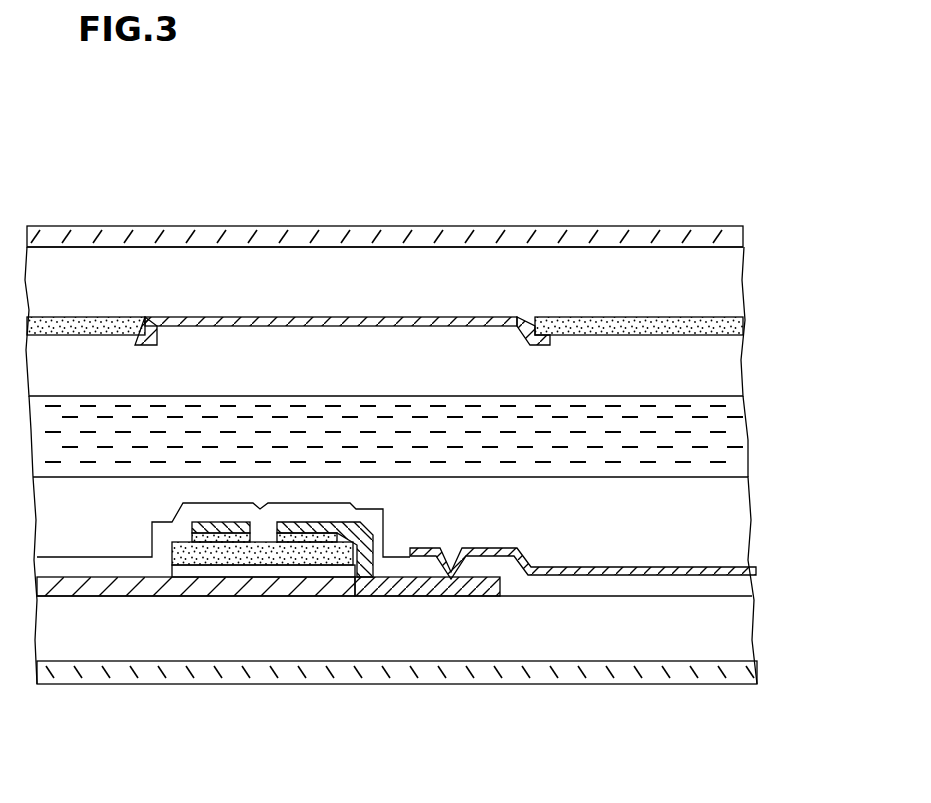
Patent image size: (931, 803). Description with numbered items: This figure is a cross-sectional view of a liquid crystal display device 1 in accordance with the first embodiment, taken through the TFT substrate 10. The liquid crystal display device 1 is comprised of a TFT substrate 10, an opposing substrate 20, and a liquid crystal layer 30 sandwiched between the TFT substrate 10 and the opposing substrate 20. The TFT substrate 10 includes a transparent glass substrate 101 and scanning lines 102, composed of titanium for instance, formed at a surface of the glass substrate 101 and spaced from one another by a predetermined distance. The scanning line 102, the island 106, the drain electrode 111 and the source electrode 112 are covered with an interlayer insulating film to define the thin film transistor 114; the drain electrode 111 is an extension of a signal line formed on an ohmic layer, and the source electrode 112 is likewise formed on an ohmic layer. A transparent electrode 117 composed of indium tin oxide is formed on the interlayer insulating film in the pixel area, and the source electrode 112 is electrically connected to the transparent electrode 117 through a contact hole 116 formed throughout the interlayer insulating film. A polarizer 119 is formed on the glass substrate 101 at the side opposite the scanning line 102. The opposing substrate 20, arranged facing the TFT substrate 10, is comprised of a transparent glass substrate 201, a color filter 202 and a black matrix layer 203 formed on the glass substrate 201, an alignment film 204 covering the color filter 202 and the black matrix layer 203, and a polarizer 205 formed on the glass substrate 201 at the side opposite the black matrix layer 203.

The liquid crystal display device 1 is at (300, 134).
The TFT substrate 10 is at (757, 473).
The opposing substrate 20 is at (753, 226).
The liquid crystal layer 30 is at (733, 442).
The transparent glass substrate 101 is at (618, 642).
The scanning line 102 is at (203, 592).
The island 106 is at (174, 560).
The drain electrode 111 is at (194, 518).
The source electrode 112 is at (385, 520).
The thin film transistor 114 is at (337, 614).
The contact hole 116 is at (442, 594).
The transparent electrode 117 is at (644, 566).
The polarizer 119 is at (268, 673).
The transparent glass substrate 201 is at (497, 265).
The color filter 202 is at (603, 320).
The black matrix layer 203 is at (373, 318).
The alignment film 204 is at (176, 362).
The polarizer 205 is at (272, 226).